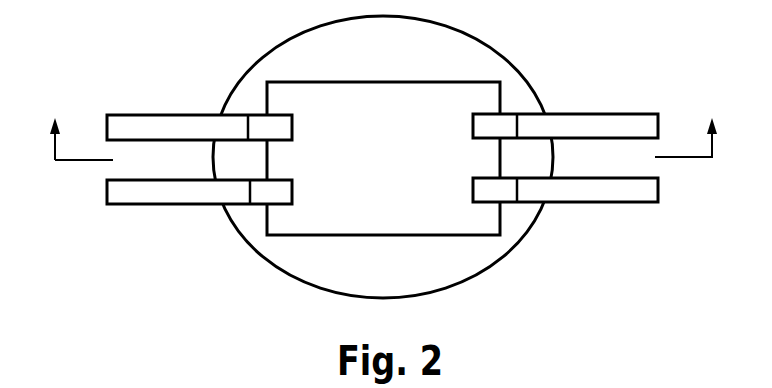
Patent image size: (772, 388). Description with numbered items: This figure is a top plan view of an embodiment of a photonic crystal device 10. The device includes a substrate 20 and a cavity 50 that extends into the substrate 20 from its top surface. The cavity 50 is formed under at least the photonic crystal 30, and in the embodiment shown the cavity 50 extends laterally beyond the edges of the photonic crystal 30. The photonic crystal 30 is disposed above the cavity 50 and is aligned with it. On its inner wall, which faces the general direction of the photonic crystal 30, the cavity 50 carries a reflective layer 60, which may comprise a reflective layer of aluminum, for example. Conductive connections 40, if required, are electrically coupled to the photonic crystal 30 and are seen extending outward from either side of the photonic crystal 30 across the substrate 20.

The photonic crystal device 10 is at (550, 62).
The substrate 20 is at (228, 48).
The photonic crystal 30 is at (397, 171).
The conductive connections 40 is at (180, 114).
The cavity 50 is at (396, 66).
The reflective layer 60 is at (398, 286).